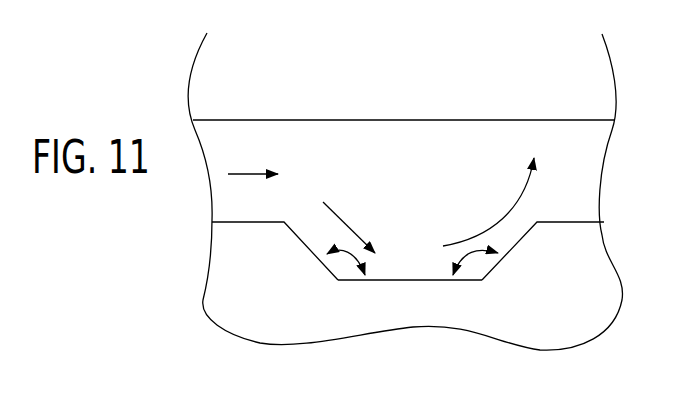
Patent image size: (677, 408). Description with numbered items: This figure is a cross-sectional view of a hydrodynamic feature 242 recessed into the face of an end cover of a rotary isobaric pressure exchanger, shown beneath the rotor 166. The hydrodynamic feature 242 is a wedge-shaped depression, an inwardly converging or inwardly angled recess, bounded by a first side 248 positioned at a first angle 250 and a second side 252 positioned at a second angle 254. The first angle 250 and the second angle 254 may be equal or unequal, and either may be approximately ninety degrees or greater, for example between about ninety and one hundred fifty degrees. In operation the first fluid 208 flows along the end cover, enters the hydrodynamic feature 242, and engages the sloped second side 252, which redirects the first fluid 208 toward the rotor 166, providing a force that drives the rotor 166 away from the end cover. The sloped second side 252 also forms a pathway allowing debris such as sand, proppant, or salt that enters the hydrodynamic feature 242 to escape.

The rotor 166 is at (407, 95).
The first fluid 208 is at (248, 174).
The hydrodynamic feature 242 is at (318, 280).
The first side 248 is at (299, 240).
The first angle 250 is at (348, 256).
The second side 252 is at (520, 243).
The second angle 254 is at (470, 258).